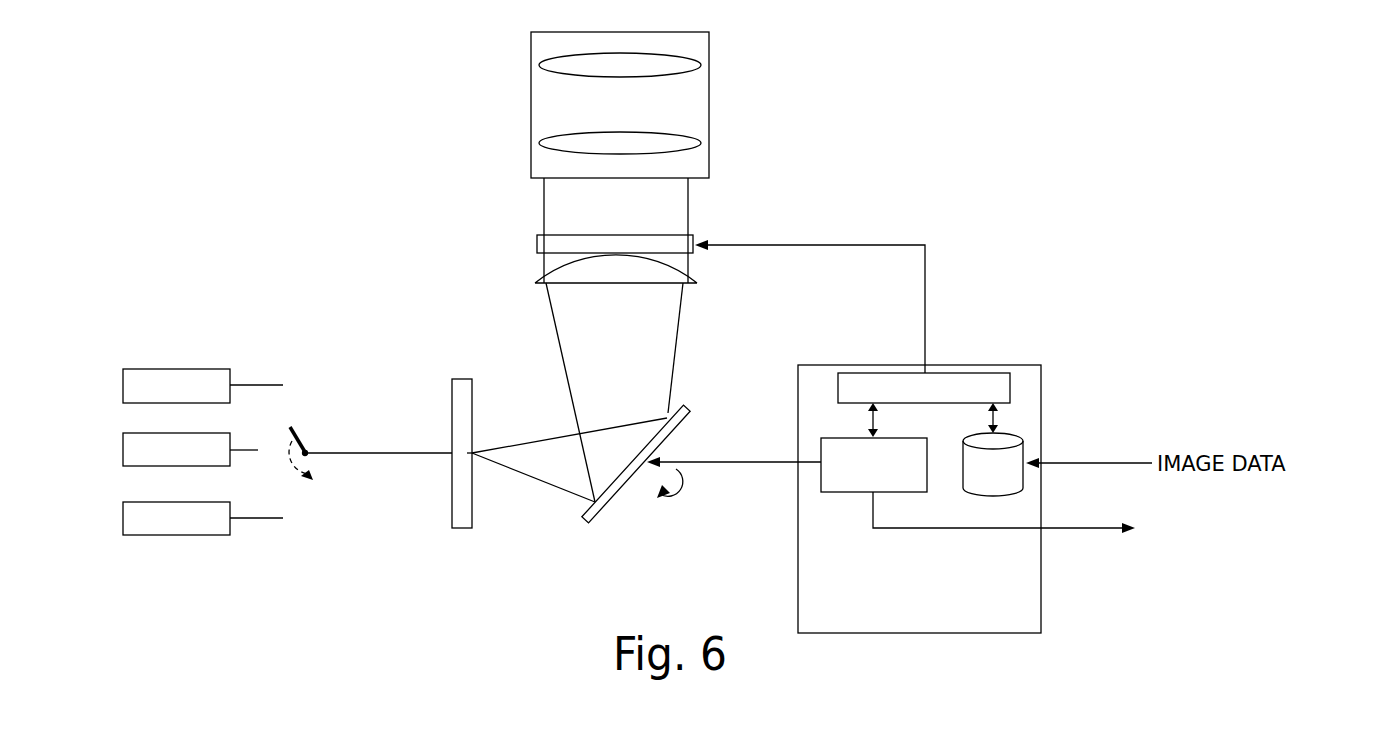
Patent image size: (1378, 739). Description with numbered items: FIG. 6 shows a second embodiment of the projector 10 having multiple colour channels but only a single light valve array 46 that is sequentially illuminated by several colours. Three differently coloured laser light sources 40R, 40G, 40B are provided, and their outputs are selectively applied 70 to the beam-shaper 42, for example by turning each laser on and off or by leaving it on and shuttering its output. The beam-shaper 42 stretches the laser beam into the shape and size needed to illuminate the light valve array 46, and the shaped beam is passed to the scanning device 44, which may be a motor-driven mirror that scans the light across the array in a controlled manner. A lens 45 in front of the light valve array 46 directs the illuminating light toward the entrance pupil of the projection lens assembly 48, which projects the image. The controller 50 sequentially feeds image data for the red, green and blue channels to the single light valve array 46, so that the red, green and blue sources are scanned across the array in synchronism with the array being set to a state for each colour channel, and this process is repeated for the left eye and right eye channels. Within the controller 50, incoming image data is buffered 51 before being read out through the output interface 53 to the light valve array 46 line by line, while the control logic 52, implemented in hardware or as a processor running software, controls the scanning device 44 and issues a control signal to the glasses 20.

The projector 10 is at (913, 61).
The projection lens assembly 48 is at (592, 157).
The light valve array 46 is at (588, 240).
The lens 45 is at (590, 270).
The scanning device 44 is at (701, 474).
The beam-shaper 42 is at (436, 448).
The red laser light source 40R is at (170, 383).
The green laser light source 40G is at (157, 447).
The blue laser light source 40B is at (170, 516).
The selective application 70 is at (314, 427).
The controller 50 is at (902, 623).
The buffer 51 is at (981, 480).
The control logic 52 is at (867, 479).
The output interface 53 is at (852, 338).
The glasses 20 is at (1105, 527).